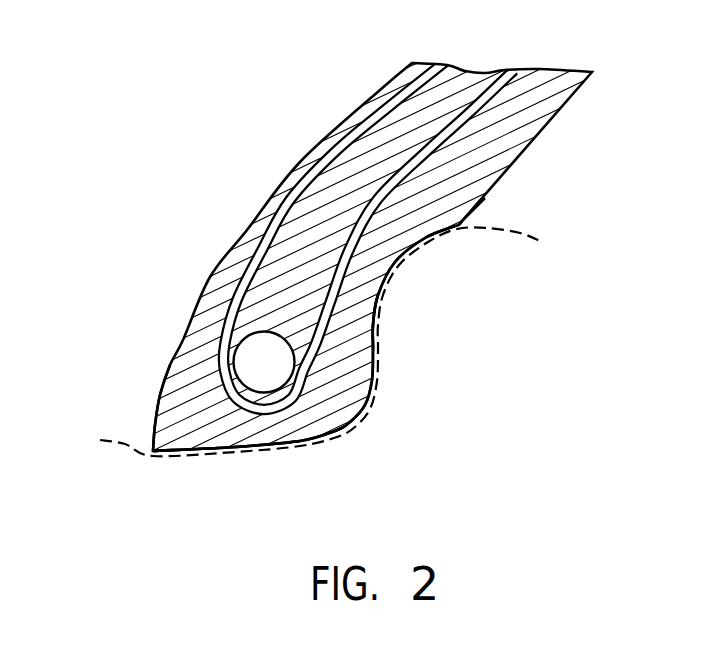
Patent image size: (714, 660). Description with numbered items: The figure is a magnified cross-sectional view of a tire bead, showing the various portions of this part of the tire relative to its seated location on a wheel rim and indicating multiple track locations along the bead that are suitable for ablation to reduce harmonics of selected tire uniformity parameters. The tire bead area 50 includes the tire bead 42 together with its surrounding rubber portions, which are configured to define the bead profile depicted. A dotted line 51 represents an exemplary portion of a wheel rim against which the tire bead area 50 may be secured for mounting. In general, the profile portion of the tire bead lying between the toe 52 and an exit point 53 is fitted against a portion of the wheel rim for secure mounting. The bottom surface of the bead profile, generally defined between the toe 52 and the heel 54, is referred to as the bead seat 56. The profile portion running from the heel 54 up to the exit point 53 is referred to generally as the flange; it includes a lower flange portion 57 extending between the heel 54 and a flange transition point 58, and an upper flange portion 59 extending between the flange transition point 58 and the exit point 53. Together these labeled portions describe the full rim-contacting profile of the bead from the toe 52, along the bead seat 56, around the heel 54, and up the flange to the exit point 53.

The tire bead area 50 is at (365, 269).
The tire bead 42 is at (257, 357).
The dotted line 51 is at (118, 436).
The toe 52 is at (150, 452).
The exit point 53 is at (455, 229).
The heel 54 is at (348, 427).
The bead seat 56 is at (349, 452).
The lower flange portion 57 is at (388, 333).
The flange transition point 58 is at (388, 333).
The upper flange portion 59 is at (457, 240).